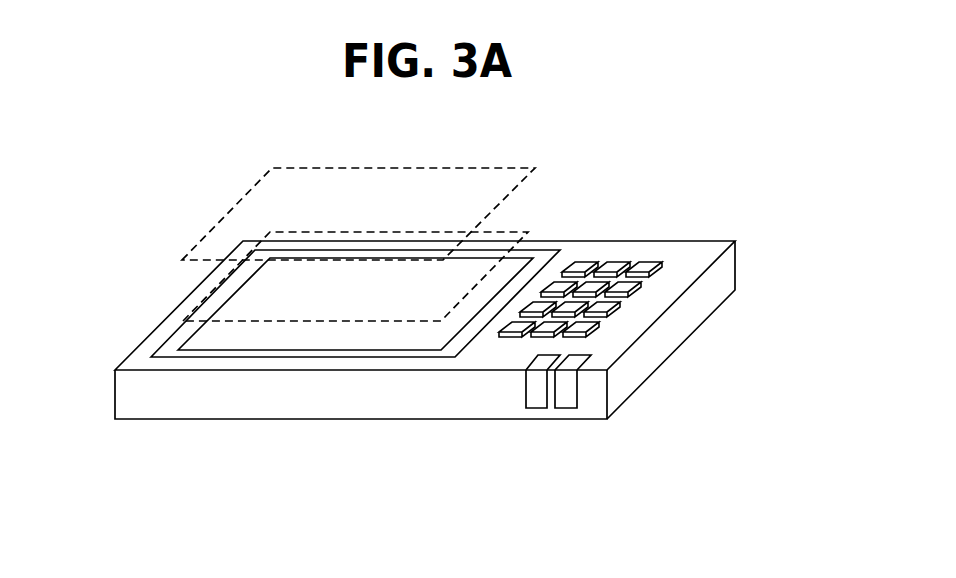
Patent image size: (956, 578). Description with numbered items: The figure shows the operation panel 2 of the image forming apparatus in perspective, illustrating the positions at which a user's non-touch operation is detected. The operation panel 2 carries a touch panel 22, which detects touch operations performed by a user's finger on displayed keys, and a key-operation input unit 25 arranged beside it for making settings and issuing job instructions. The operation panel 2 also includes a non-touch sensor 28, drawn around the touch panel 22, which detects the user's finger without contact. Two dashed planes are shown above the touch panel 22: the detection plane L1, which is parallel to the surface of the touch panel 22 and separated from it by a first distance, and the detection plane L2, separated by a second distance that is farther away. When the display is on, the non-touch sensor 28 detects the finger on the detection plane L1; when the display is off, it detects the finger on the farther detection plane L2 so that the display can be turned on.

The operation panel 2 is at (736, 285).
The touch panel 22 is at (313, 338).
The key-operation input unit 25 is at (618, 262).
The non-touch sensor 28 is at (168, 342).
The detection plane L1 is at (532, 229).
The detection plane L2 is at (534, 171).